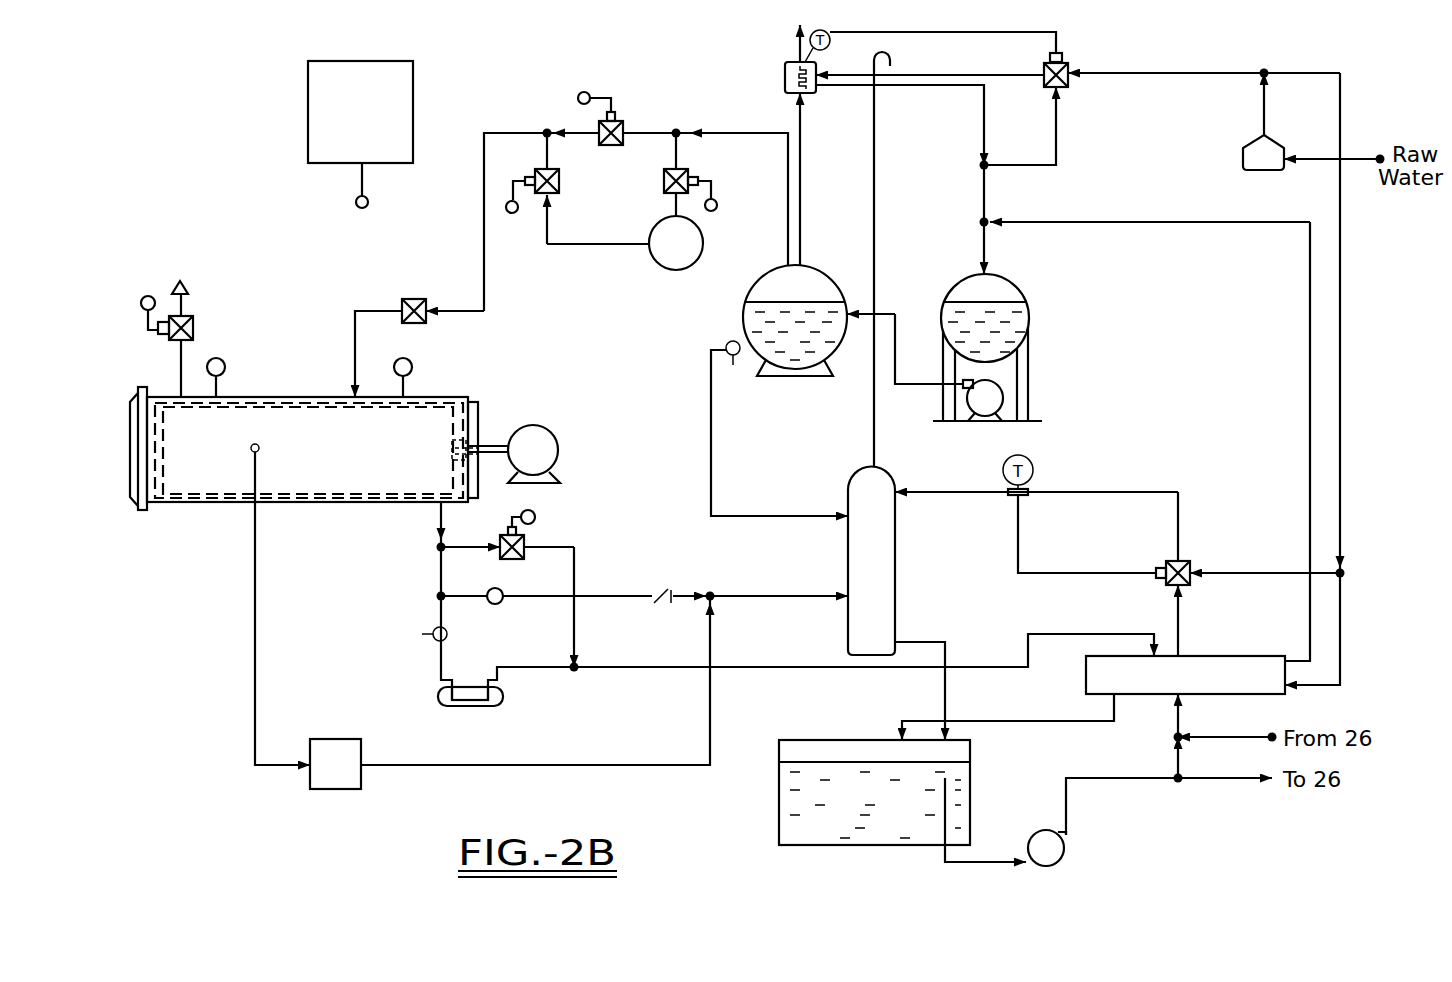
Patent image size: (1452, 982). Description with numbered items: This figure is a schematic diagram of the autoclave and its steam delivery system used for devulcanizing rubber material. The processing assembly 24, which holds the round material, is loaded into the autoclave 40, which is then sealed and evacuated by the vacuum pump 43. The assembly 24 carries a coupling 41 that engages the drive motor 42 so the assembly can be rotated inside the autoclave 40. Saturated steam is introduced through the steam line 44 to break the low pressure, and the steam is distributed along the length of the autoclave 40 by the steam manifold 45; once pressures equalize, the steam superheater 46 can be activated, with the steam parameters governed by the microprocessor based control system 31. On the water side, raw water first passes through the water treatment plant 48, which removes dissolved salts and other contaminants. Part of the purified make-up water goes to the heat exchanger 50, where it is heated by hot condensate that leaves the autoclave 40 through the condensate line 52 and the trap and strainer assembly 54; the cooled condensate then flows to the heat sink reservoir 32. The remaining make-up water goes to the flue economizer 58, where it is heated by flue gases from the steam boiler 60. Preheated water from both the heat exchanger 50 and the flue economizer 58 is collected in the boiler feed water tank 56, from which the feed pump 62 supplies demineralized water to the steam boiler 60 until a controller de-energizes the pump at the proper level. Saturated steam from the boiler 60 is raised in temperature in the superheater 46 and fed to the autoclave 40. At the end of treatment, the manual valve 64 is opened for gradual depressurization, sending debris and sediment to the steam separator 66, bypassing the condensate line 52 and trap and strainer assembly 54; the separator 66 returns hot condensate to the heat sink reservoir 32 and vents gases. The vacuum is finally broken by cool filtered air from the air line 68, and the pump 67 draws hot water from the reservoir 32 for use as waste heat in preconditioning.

The processing assembly 24 is at (341, 497).
The control system 31 is at (308, 101).
The heat sink reservoir 32 is at (779, 806).
The autoclave 40 is at (217, 505).
The coupling 41 is at (456, 448).
The drive motor 42 is at (553, 442).
The vacuum pump 43 is at (318, 789).
The steam line 44 is at (484, 248).
The steam manifold 45 is at (277, 403).
The steam superheater 46 is at (660, 266).
The water treatment plant 48 is at (1258, 170).
The heat exchanger 50 is at (1220, 655).
The condensate line 52 is at (661, 668).
The trap and strainer assembly 54 is at (462, 706).
The boiler feed water tank 56 is at (1028, 308).
The flue economizer 58 is at (785, 73).
The steam boiler 60 is at (810, 358).
The feed pump 62 is at (1004, 402).
The manual valve 64 is at (497, 604).
The steam separator 66 is at (897, 580).
The pump 67 is at (1062, 860).
The air line 68 is at (181, 357).